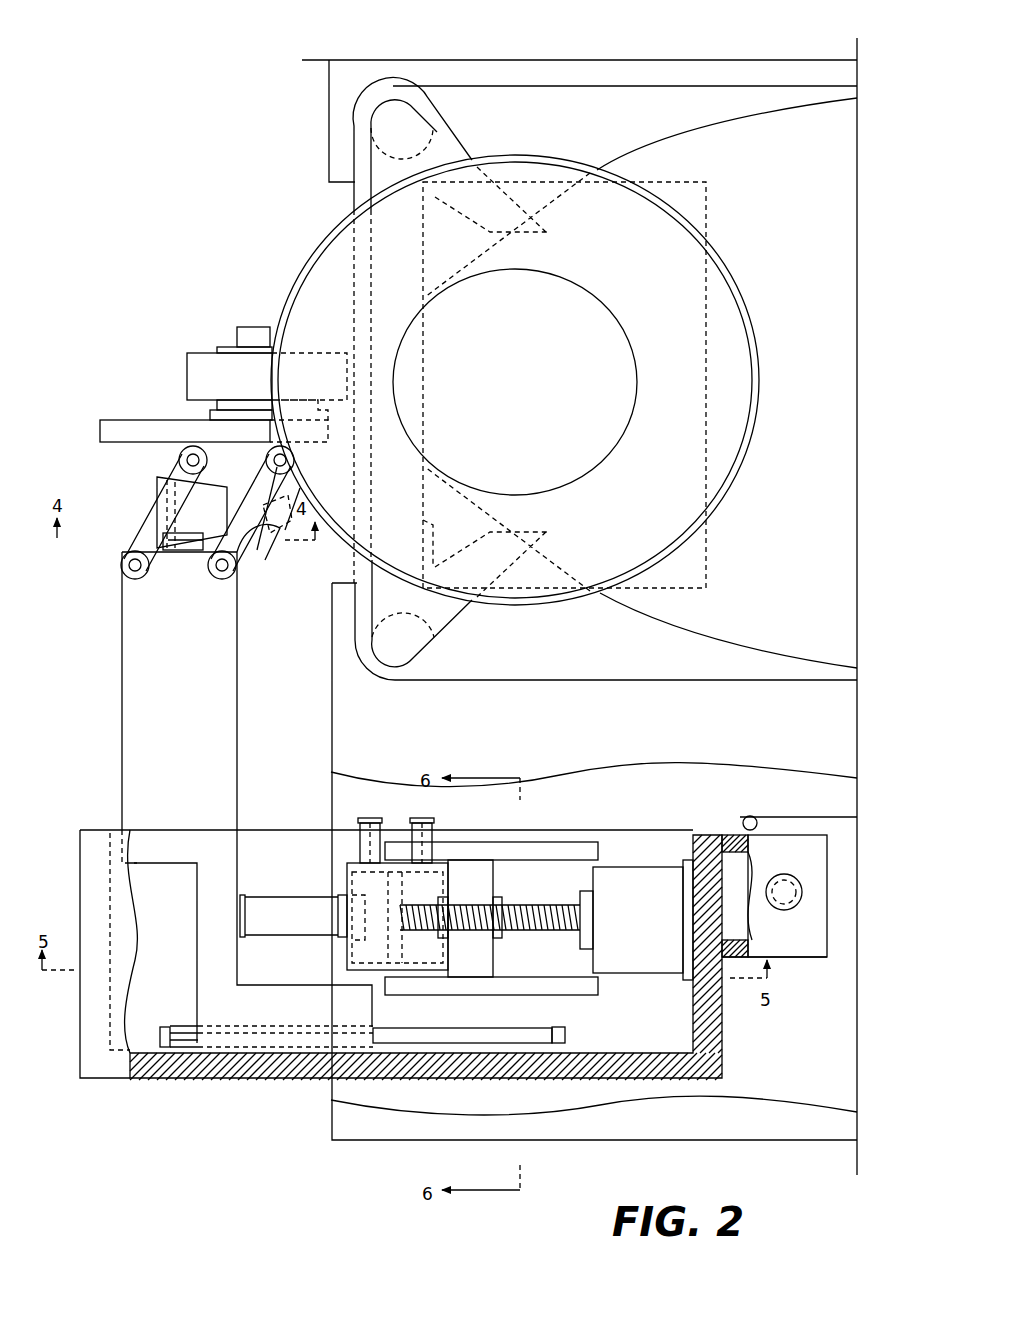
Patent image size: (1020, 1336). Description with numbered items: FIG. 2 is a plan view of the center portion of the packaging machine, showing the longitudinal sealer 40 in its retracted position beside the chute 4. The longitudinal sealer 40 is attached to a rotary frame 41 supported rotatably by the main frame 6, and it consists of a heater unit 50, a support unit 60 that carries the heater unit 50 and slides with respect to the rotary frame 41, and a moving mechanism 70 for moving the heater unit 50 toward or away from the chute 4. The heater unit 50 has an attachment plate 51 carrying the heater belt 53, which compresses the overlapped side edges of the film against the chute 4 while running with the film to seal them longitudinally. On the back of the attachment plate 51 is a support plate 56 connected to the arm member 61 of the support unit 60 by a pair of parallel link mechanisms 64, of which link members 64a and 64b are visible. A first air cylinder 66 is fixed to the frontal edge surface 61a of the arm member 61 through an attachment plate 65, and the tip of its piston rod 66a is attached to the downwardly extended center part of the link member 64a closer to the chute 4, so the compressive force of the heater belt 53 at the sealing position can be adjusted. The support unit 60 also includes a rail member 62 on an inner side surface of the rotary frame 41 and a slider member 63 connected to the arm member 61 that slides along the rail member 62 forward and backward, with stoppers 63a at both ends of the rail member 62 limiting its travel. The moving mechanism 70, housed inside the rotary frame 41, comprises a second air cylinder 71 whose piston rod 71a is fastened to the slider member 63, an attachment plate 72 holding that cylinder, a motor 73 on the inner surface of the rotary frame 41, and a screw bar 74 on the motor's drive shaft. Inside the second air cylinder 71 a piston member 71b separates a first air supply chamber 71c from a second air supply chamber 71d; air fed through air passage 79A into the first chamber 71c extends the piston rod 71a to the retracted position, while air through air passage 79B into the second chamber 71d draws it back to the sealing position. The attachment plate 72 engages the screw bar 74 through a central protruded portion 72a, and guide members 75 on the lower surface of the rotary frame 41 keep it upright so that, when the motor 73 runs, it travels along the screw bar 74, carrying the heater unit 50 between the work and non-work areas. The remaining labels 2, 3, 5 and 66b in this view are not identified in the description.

The frame 2 is at (350, 80).
The lower housing wall 3 is at (707, 622).
The chute 4 is at (750, 463).
The upper housing wall 5 is at (568, 108).
The main frame 6 is at (847, 947).
The longitudinal sealer 40 is at (90, 808).
The rotary frame 41 is at (638, 1068).
The heater unit 50 is at (135, 328).
The attachment plate 51 is at (118, 428).
The heater belt 53 is at (195, 372).
The support plate 56 is at (180, 450).
The support unit 60 is at (248, 848).
The arm member 61 is at (140, 660).
The frontal edge surface 61a is at (258, 562).
The rail member 62 is at (515, 1040).
The slider member 63 is at (208, 925).
The stoppers 63a is at (165, 1048).
The link mechanisms 64 is at (128, 527).
The link member 64a is at (270, 487).
The link member 64b is at (122, 568).
The attachment plate 65 is at (180, 550).
The first air cylinder 66 is at (200, 511).
The piston rod 66a is at (265, 537).
The link arm upper end 66b is at (296, 460).
The moving mechanism 70 is at (640, 825).
The second air cylinder 71 is at (345, 957).
The piston rod 71a is at (282, 910).
The piston member 71b is at (397, 962).
The first air supply chamber 71c is at (422, 958).
The second air supply chamber 71d is at (370, 882).
The attachment plate 72 is at (480, 945).
The protruded portion 72a is at (502, 897).
The motor 73 is at (650, 958).
The screw bar 74 is at (528, 905).
The guide members 75 is at (467, 843).
The air passage 79A is at (420, 818).
The air passage 79B is at (370, 818).